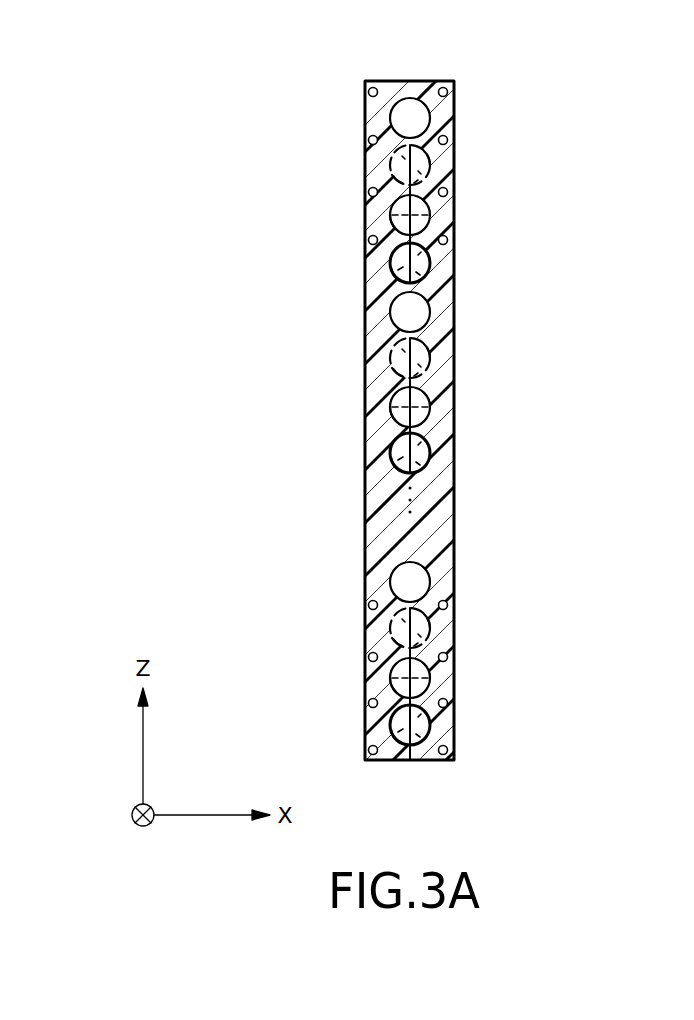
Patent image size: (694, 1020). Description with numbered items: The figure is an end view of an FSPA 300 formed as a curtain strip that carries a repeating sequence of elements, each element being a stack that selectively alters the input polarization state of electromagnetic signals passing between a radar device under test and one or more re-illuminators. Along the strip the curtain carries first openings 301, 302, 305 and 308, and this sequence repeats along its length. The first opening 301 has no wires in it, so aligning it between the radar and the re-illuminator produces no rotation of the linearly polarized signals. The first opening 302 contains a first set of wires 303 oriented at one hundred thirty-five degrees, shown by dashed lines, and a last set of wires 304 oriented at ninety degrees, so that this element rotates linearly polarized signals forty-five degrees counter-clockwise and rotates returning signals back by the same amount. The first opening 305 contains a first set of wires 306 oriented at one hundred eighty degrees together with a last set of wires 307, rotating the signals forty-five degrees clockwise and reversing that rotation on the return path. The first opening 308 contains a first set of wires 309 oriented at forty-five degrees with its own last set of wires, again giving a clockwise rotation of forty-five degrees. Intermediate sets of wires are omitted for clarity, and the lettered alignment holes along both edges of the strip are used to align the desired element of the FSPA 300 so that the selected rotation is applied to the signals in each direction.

The FSPA 300 is at (395, 80).
The first opening 301 is at (454, 120).
The first opening 302 is at (454, 168).
The first set of wires 303 is at (400, 177).
The last set of wires 304 is at (454, 157).
The first opening 305 is at (454, 222).
The first set of wires 306 is at (392, 217).
The last set of wires 307 is at (454, 210).
The first opening 308 is at (454, 262).
The first set of wires 309 is at (392, 266).